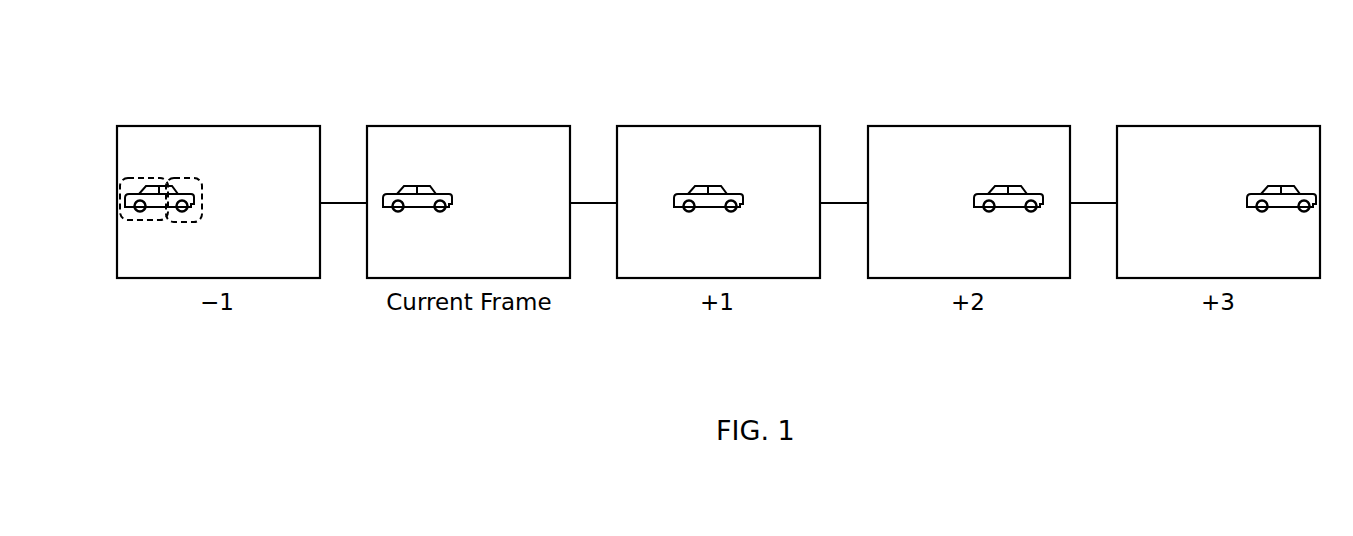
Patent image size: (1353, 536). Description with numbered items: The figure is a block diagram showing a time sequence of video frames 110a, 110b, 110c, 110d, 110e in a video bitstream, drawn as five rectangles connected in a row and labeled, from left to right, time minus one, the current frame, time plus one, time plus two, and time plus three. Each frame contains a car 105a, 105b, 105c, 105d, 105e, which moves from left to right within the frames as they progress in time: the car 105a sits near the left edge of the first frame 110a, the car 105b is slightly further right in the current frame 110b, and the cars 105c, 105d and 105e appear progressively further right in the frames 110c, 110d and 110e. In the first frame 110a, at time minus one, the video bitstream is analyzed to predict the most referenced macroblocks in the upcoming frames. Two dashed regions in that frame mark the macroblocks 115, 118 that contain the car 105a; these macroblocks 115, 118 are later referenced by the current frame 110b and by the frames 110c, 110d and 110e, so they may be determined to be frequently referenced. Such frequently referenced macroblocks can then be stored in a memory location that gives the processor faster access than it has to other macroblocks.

The car 105a is at (182, 197).
The car 105b is at (437, 190).
The car 105c is at (717, 190).
The car 105d is at (1028, 190).
The car 105e is at (1282, 190).
The video frame 110a is at (245, 126).
The video frame 110b is at (504, 126).
The video frame 110c is at (780, 126).
The video frame 110d is at (907, 126).
The video frame 110e is at (1168, 126).
The macroblock 115 is at (135, 222).
The macroblock 118 is at (200, 215).